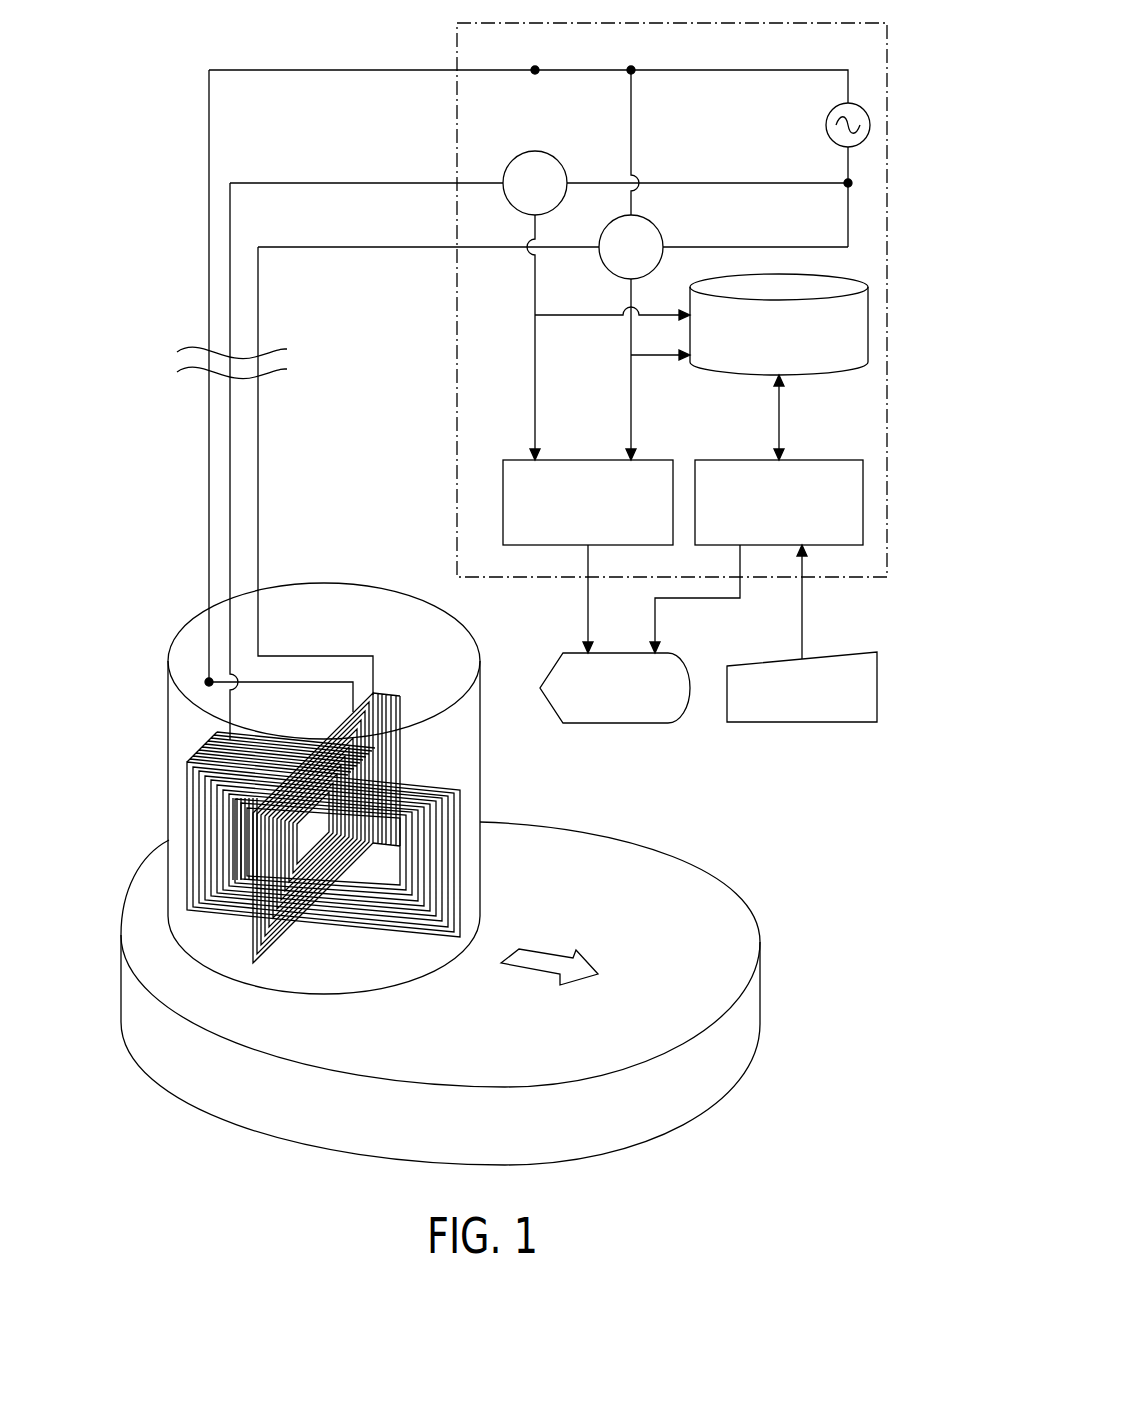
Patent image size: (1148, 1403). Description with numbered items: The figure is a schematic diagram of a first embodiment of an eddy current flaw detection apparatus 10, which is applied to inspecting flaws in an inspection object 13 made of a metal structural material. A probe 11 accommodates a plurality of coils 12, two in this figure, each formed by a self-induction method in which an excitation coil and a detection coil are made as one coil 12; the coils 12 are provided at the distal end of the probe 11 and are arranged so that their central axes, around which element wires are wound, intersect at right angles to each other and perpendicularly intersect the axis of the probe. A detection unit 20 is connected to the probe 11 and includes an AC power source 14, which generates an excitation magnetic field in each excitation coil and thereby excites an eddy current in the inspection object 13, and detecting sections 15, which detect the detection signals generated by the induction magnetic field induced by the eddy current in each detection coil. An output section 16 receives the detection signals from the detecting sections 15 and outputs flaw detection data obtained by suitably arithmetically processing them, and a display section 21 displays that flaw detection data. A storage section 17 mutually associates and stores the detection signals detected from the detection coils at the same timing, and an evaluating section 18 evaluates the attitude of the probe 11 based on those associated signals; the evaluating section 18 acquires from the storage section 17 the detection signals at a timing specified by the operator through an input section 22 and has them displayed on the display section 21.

The eddy current flaw detection apparatus 10 is at (148, 100).
The probe 11 is at (343, 585).
The coil 12 is at (393, 742).
The inspection object 13 is at (684, 906).
The AC power source 14 is at (826, 125).
The detecting section 15 is at (513, 158).
The output section 16 is at (575, 460).
The storage section 17 is at (845, 280).
The evaluating section 18 is at (824, 460).
The detection unit 20 is at (457, 305).
The display section 21 is at (611, 653).
The input section 22 is at (845, 657).